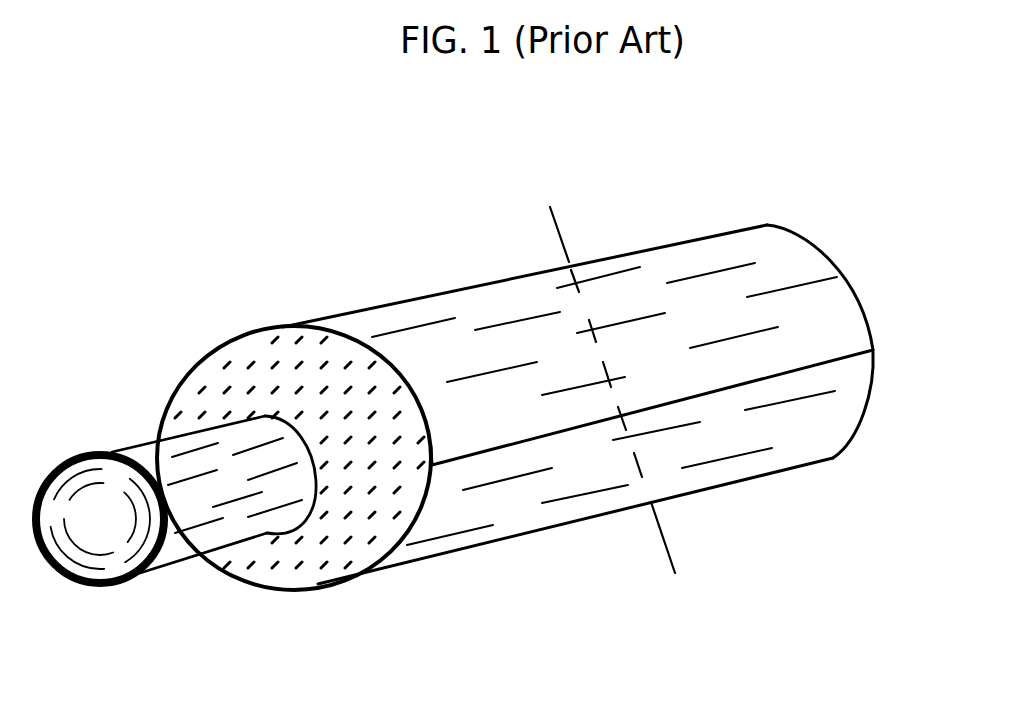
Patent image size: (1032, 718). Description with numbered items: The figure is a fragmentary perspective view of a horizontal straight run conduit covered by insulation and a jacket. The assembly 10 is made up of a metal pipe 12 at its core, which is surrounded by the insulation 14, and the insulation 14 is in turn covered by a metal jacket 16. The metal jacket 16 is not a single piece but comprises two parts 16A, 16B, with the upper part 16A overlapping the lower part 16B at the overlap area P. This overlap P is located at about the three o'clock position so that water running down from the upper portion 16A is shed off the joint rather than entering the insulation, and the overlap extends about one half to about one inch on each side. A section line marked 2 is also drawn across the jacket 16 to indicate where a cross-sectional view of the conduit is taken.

The assembly 10 is at (432, 274).
The metal pipe 12 is at (172, 567).
The insulation 14 is at (265, 363).
The metal jacket 16 is at (523, 540).
The jacket part 16A is at (728, 230).
The jacket part 16B is at (798, 467).
The overlap area P is at (425, 446).
The section line 2- 2 is at (548, 208).